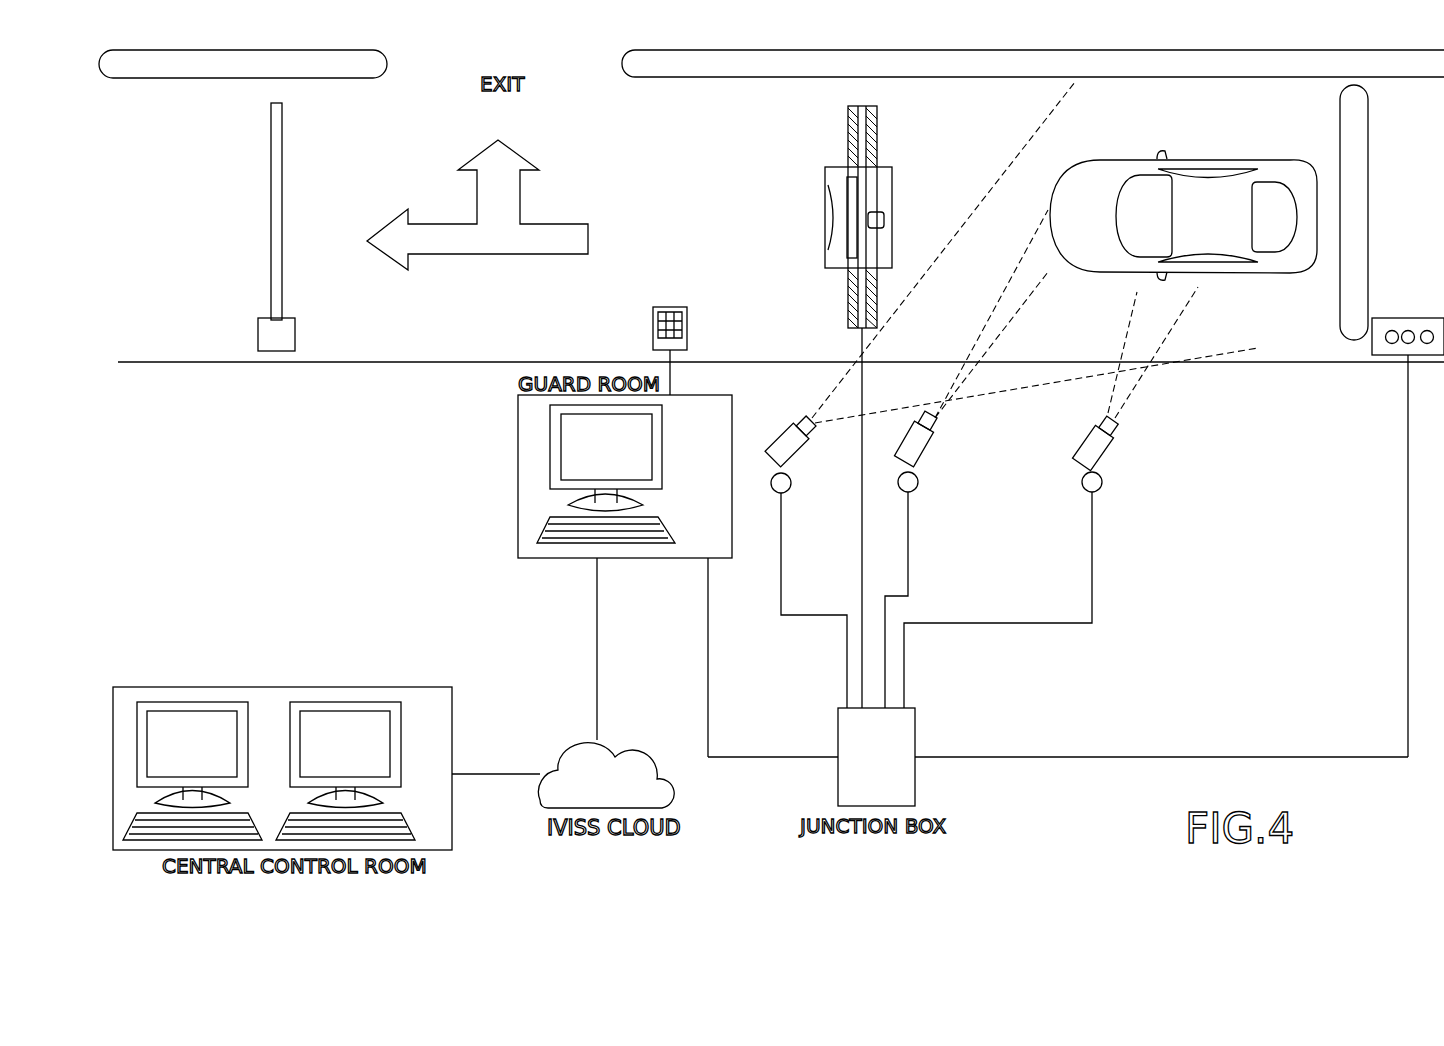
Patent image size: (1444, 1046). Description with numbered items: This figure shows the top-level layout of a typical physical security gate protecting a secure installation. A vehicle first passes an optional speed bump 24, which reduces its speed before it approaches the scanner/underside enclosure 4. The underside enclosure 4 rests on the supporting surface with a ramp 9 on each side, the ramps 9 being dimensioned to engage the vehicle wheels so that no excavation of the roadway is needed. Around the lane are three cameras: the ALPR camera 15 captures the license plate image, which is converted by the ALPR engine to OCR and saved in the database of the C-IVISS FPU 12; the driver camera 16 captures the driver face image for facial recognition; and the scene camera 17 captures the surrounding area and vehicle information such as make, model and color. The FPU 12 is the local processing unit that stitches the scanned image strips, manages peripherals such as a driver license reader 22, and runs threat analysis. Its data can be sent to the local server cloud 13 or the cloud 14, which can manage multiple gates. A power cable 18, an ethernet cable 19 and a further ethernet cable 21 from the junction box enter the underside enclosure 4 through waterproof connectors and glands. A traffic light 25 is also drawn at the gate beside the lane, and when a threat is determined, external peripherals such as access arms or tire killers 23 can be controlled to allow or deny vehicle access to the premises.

The scanner/underside enclosure 4 is at (892, 205).
The ramp 9 is at (876, 147).
The C-IVISS FPU 12 is at (568, 438).
The local server cloud 13 is at (343, 722).
The cloud 14 is at (193, 722).
The ALPR camera 15 is at (915, 450).
The driver camera 16 is at (1097, 447).
The scene camera 17 is at (789, 462).
The power cable 18 is at (813, 615).
The ethernet cable 19 is at (862, 490).
The ethernet cable 21 is at (772, 758).
The driver license reader 22 is at (655, 327).
The tire killer 23 is at (275, 195).
The speed bump 24 is at (1355, 163).
The traffic light 25 is at (1397, 355).